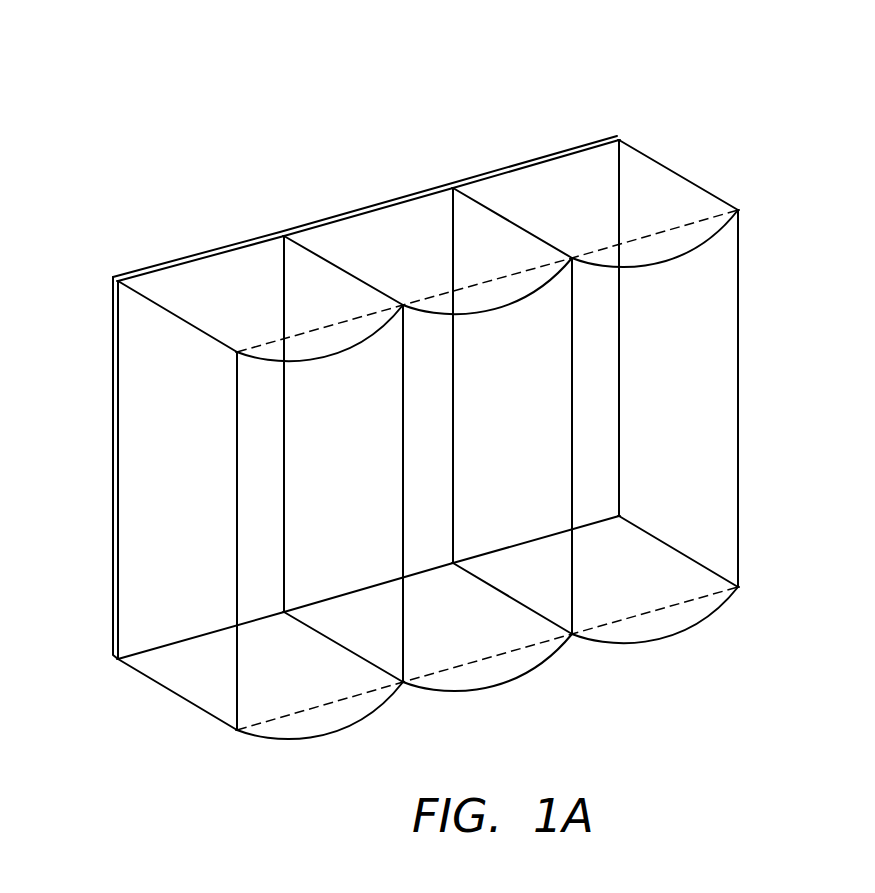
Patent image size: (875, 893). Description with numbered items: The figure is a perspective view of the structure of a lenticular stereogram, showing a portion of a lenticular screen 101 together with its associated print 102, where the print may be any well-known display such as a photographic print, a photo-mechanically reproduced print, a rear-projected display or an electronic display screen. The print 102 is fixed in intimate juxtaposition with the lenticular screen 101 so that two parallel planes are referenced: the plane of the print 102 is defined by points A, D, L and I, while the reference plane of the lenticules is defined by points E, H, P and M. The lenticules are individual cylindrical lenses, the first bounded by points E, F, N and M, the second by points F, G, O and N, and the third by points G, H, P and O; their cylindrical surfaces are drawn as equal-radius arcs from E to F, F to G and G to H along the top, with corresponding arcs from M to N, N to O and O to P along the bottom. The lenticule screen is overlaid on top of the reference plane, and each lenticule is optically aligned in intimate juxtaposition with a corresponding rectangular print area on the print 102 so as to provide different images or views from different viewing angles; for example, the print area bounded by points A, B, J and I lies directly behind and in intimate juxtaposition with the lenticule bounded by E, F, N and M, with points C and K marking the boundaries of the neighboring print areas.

The lenticular screen 101 is at (468, 410).
The print 102 is at (580, 147).
The point A is at (107, 270).
The point B is at (282, 221).
The point C is at (450, 172).
The point D is at (618, 125).
The point E is at (238, 339).
The point F is at (406, 291).
The point G is at (575, 245).
The point H is at (743, 197).
The point I is at (106, 648).
The point J is at (275, 601).
The point K is at (443, 553).
The point L is at (610, 506).
The point M is at (241, 748).
The point N is at (407, 701).
The point O is at (577, 653).
The point P is at (743, 605).